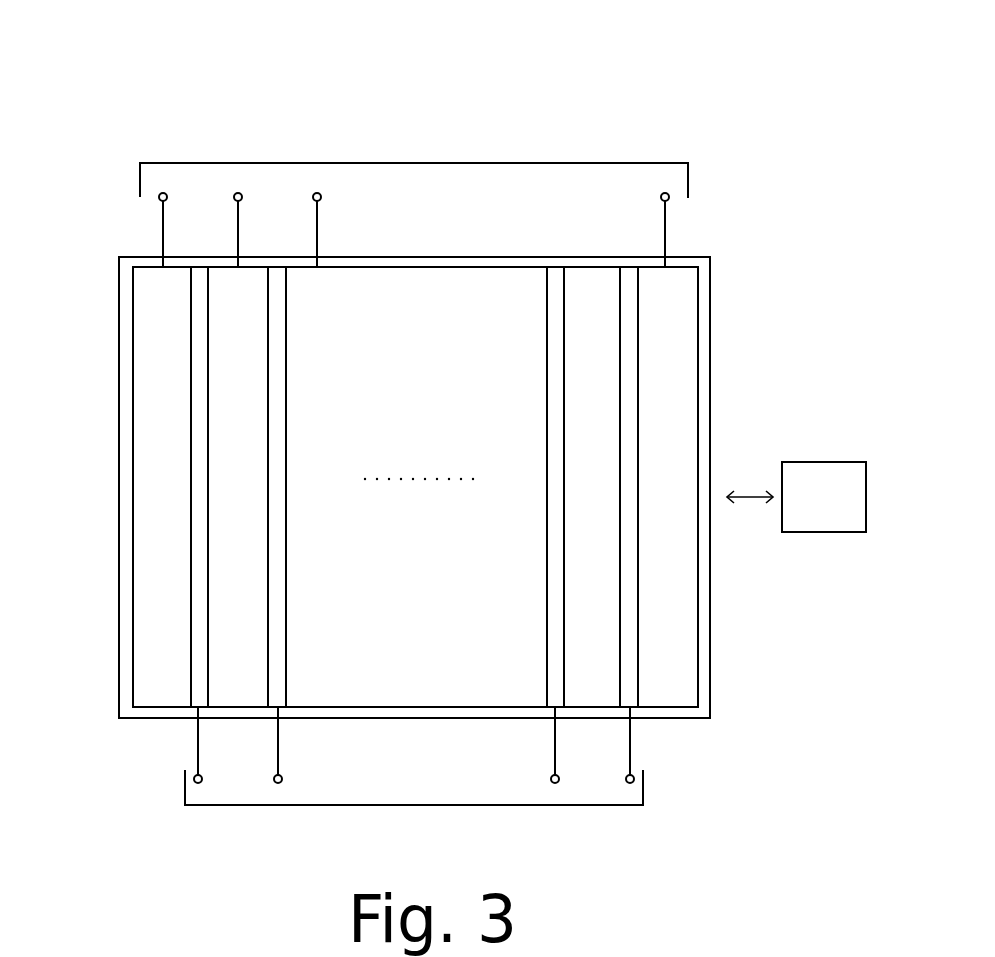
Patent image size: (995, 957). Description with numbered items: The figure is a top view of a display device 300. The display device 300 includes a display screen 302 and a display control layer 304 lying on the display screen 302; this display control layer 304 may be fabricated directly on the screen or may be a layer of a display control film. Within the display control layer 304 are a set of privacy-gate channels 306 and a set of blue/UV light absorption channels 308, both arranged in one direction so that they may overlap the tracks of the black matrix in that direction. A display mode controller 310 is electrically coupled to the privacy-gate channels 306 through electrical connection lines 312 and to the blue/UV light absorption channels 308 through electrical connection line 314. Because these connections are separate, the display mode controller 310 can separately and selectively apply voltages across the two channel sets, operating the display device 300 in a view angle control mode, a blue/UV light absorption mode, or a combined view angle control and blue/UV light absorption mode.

The display device 300 is at (613, 50).
The display screen 302 is at (710, 315).
The display control layer 304 is at (467, 267).
The set of privacy-gate channels 306 is at (268, 449).
The set of blue/UV light absorption channels 308 is at (240, 643).
The display mode controller 310 is at (804, 509).
The electrical connection lines 312 is at (502, 805).
The electrical connection line 314 is at (425, 163).